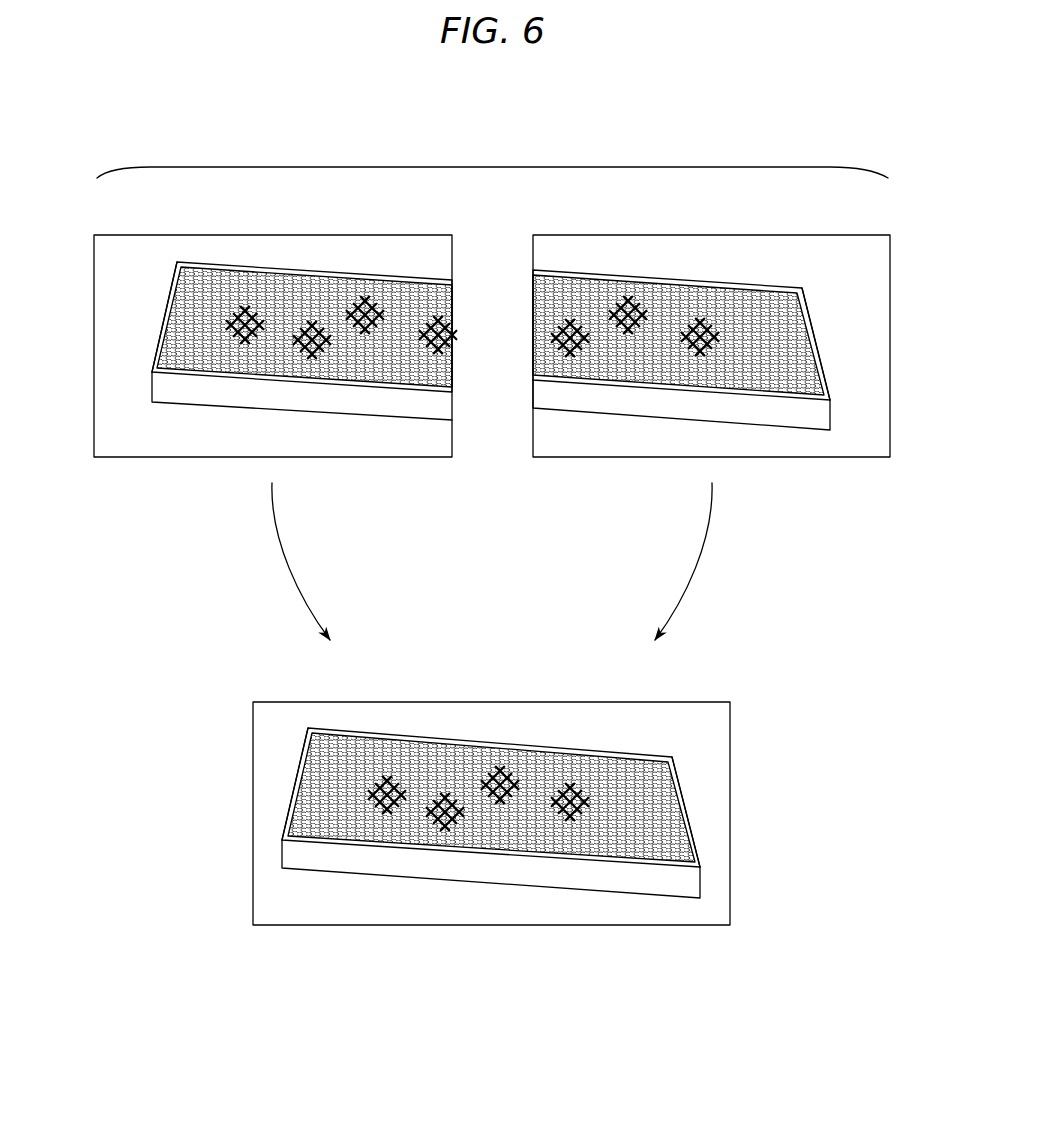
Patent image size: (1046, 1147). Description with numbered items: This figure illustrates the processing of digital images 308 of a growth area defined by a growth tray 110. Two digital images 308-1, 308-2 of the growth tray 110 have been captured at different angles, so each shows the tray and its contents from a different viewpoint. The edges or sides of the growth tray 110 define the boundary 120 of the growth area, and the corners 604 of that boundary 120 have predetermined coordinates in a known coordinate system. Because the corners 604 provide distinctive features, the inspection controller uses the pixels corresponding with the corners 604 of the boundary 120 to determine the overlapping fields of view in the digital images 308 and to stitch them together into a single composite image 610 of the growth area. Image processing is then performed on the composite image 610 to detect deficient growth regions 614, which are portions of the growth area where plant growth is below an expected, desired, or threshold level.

The digital images 308 is at (492, 167).
The first digital image 308-1 is at (168, 457).
The second digital image 308-2 is at (840, 457).
The growth tray 110 is at (392, 276).
The boundary 120 is at (262, 394).
The corners 604 is at (141, 367).
The deficient growth region 614 is at (564, 786).
The composite image 610 is at (381, 925).